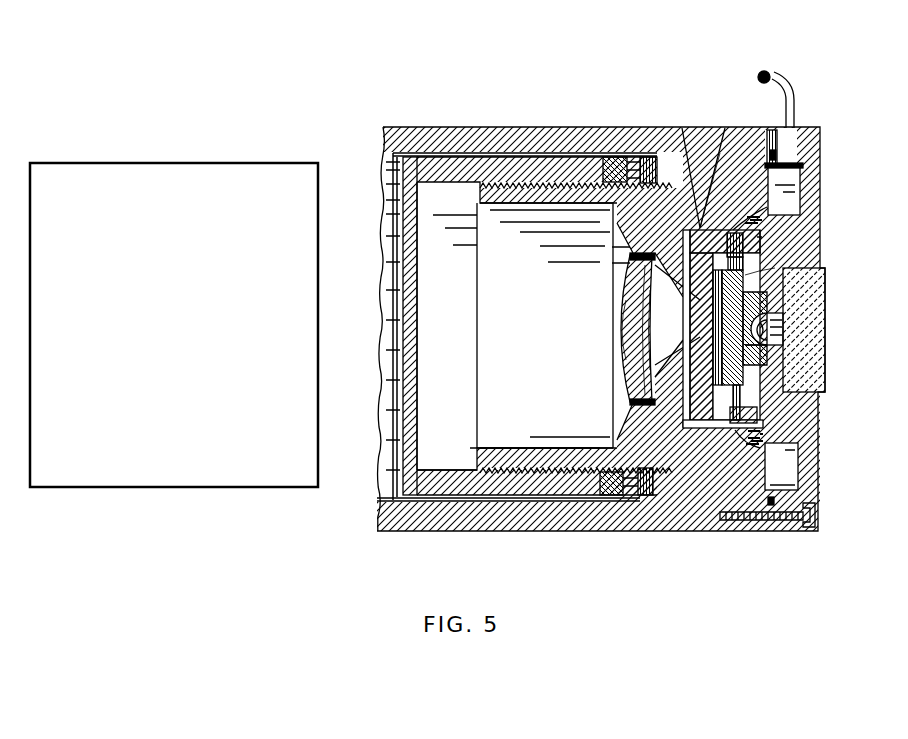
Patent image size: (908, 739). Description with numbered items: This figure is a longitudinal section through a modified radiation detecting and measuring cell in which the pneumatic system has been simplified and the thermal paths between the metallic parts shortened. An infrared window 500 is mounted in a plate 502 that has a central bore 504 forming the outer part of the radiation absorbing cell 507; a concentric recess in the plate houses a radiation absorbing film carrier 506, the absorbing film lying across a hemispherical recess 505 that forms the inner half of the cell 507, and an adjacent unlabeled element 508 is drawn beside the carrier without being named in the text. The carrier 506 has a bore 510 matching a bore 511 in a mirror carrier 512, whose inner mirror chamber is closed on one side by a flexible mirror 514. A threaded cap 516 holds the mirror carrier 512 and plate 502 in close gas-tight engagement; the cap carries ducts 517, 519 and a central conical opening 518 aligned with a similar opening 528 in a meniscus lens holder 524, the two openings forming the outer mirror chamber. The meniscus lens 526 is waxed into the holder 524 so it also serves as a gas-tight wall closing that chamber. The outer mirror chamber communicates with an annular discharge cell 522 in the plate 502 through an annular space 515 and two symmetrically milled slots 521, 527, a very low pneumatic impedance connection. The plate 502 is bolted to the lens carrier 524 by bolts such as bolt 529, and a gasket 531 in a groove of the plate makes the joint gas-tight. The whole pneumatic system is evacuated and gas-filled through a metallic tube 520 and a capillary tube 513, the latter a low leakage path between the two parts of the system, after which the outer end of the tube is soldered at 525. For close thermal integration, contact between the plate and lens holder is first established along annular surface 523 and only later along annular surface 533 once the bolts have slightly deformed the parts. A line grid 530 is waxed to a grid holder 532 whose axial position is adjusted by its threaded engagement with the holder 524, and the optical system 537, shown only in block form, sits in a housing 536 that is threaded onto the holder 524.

The infrared window 500 is at (820, 305).
The plate 502 is at (815, 147).
The central bore 504 is at (776, 340).
The hemispherical recess 505 is at (777, 330).
The radiation absorbing film carrier 506 is at (757, 293).
The radiation absorbing cell 507 is at (760, 347).
The cell mount 508 is at (800, 320).
The bore 510 is at (745, 378).
The bore 511 is at (713, 338).
The mirror carrier 512 is at (700, 242).
The capillary tube 513 is at (735, 430).
The flexible mirror 514 is at (720, 322).
The annular space 515 is at (682, 128).
The threaded cap 516 is at (690, 415).
The duct 517 is at (735, 143).
The central conical opening 518 is at (700, 300).
The duct 519 is at (800, 420).
The metallic tube 520 is at (792, 95).
The slot 521 is at (775, 217).
The annular discharge cell 522 is at (790, 198).
The annular surface 523 is at (770, 228).
The meniscus lens holder 524 is at (737, 143).
The soldered end 525 is at (766, 71).
The meniscus lens 526 is at (618, 330).
The slot 527 is at (775, 445).
The opening 528 is at (660, 352).
The bolt 529 is at (815, 517).
The line grid 530 is at (403, 330).
The gasket 531 is at (775, 501).
The grid holder 532 is at (557, 487).
The annular surface 533 is at (780, 128).
The housing 536 is at (403, 517).
The optical system 537 is at (138, 181).